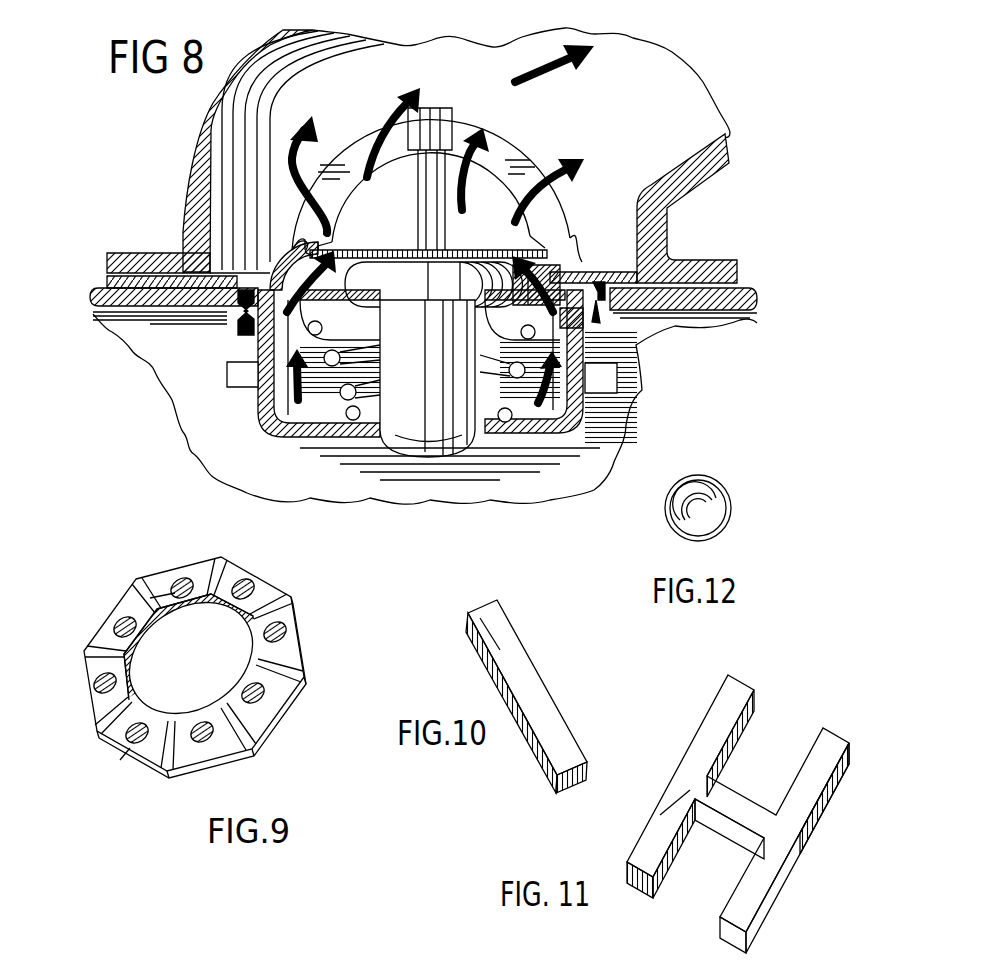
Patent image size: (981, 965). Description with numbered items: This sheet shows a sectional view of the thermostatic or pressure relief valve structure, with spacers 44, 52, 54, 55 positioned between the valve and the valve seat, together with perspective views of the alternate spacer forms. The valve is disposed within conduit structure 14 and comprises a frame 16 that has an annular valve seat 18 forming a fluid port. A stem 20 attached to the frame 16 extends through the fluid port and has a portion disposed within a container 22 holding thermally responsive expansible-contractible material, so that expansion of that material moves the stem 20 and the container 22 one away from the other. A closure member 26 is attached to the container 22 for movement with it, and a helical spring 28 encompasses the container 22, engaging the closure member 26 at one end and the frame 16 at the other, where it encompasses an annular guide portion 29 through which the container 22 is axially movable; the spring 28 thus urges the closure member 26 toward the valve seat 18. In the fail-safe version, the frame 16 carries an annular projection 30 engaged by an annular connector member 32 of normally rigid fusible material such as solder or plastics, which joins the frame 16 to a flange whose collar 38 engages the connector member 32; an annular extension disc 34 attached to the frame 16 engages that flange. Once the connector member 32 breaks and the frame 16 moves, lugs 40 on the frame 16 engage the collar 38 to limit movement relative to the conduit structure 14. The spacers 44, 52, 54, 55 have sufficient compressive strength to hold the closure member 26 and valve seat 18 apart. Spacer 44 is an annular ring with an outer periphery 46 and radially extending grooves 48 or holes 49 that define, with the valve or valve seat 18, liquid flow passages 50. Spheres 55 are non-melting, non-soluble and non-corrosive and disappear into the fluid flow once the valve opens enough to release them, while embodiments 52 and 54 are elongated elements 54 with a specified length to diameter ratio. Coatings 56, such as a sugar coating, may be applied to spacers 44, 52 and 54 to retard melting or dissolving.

In FIG. 8, the conduit structure 14 is at (127, 252).
In FIG. 8, the frame 16 is at (372, 141).
In FIG. 8, the annular valve seat 18 is at (518, 250).
In FIG. 8, the stem 20 is at (416, 208).
In FIG. 8, the container 22 is at (409, 390).
In FIG. 8, the closure member 26 is at (348, 300).
In FIG. 8, the helical spring 28 is at (345, 395).
In FIG. 8, the annular guide portion 29 is at (383, 431).
In FIG. 8, the annular projection 30 is at (227, 363).
In FIG. 8, the annular connector member 32 is at (640, 335).
In FIG. 8, the annular extension disc 34 is at (590, 283).
In FIG. 8, the collar 38 is at (204, 305).
In FIG. 8, the lugs 40 is at (227, 388).
In FIG. 8, the spacer 44 is at (540, 264).
In FIG. 9, the spacer 44 is at (293, 618).
In FIG. 9, the outer periphery 46 is at (305, 642).
In FIG. 9, the radially extending grooves 48 is at (246, 722).
In FIG. 9, the holes 49 is at (185, 584).
In FIG. 9, the liquid flow passages 50 is at (168, 760).
In FIG. 10, the spacer 52 is at (540, 700).
In FIG. 11, the elongated elements 54 is at (832, 728).
In FIG. 12, the spheres 55 is at (727, 487).
In FIG. 9, the coatings 56 is at (162, 593).
In FIG. 10, the coatings 56 is at (495, 625).
In FIG. 11, the coatings 56 is at (660, 815).